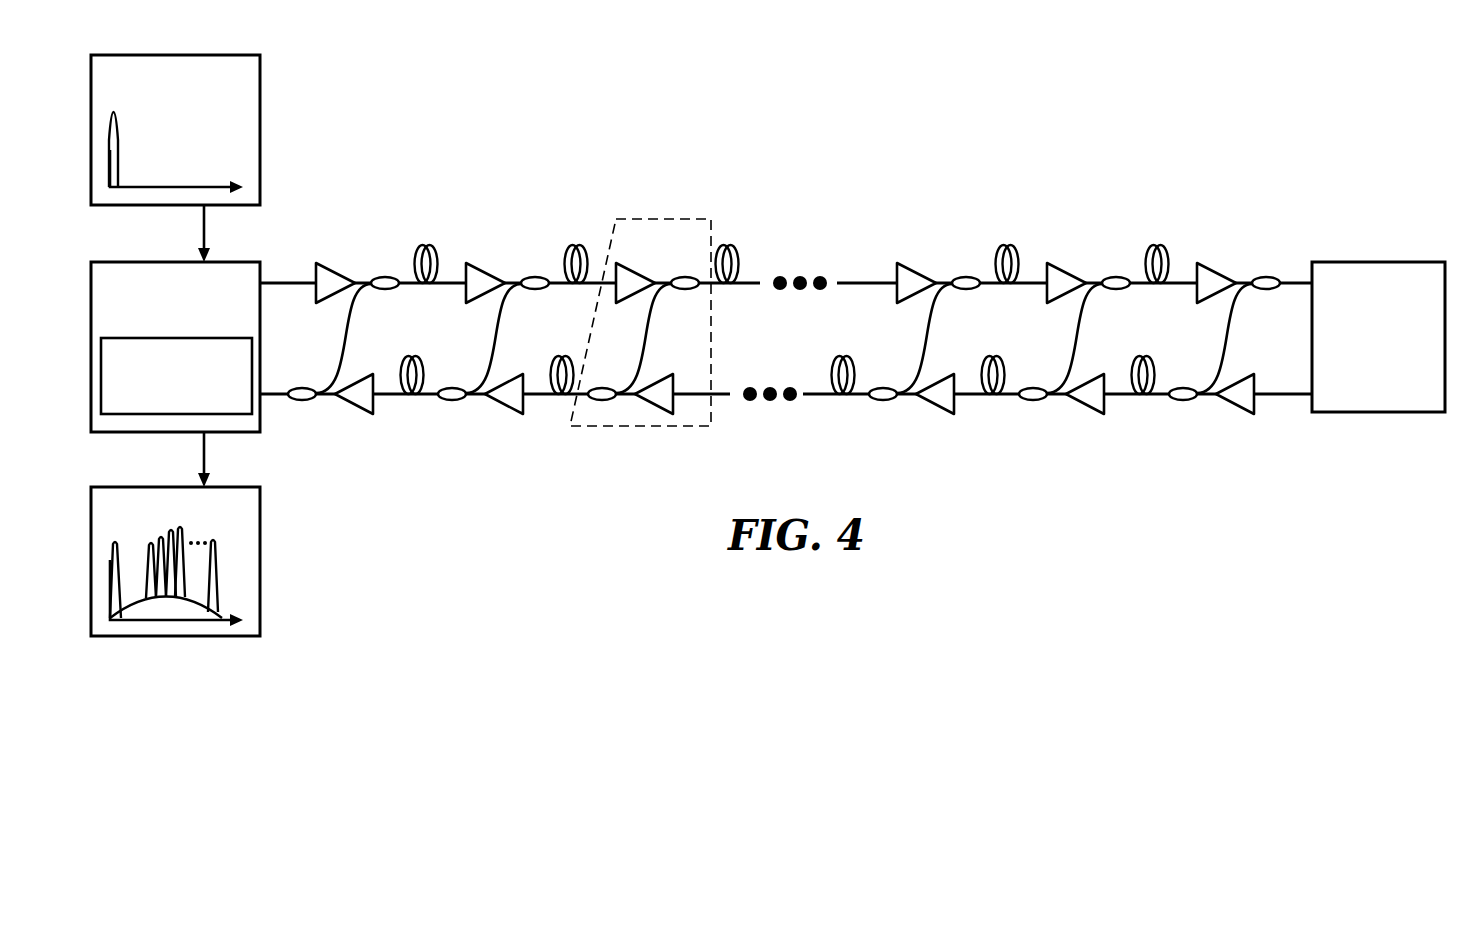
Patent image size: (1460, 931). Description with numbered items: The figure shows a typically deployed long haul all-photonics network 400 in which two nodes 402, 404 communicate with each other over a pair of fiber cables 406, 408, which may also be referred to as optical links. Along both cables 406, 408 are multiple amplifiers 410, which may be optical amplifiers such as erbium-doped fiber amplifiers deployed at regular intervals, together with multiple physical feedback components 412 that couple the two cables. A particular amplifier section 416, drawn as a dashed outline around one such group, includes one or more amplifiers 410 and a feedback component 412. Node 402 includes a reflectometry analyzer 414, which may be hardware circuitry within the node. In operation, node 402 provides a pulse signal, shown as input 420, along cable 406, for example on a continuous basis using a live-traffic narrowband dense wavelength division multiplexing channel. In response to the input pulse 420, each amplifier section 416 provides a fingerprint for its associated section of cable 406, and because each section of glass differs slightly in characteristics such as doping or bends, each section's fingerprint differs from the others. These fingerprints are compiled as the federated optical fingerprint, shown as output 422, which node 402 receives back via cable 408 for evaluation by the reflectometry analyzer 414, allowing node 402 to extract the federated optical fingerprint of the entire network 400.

The long haul all-photonics network 400 is at (1003, 127).
The node 402 is at (196, 328).
The node 404 is at (1399, 363).
The fiber cable 406 is at (757, 245).
The fiber cable 408 is at (857, 412).
The amplifier 410 is at (327, 269).
The physical feedback component 412 is at (342, 354).
The reflectometry analyzer 414 is at (150, 337).
The amplifier section 416 is at (658, 218).
The input 420 is at (226, 89).
The output 422 is at (236, 521).